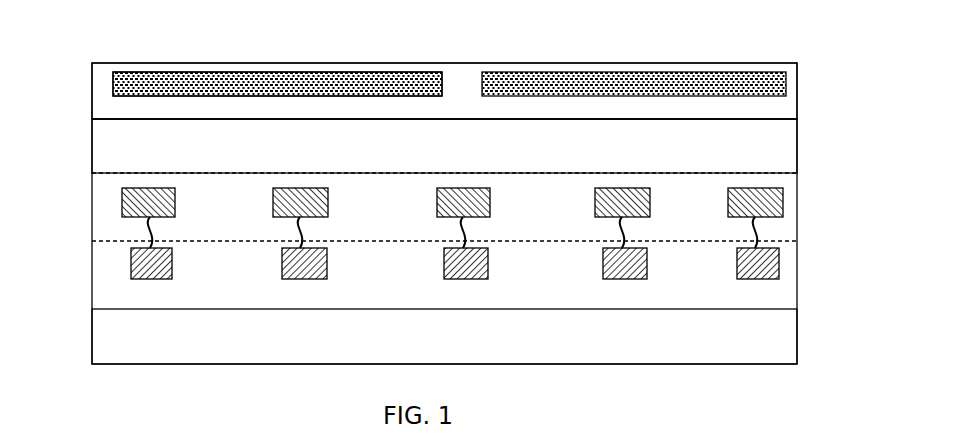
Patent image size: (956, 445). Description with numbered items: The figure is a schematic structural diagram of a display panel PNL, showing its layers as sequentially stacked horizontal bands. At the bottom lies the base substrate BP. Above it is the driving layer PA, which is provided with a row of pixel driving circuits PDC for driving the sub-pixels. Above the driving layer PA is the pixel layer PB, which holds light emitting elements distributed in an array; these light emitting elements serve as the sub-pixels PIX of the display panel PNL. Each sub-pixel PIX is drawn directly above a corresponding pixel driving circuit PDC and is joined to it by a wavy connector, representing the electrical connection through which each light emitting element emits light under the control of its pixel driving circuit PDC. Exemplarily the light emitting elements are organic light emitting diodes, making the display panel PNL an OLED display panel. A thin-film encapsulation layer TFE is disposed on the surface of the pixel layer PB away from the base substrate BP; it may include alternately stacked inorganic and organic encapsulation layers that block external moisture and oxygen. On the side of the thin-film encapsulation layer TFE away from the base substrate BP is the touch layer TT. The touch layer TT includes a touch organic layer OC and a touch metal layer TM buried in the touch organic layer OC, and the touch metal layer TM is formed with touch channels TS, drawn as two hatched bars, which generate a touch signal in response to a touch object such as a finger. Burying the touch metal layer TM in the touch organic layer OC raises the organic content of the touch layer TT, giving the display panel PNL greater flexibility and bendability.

The display panel PNL is at (444, 200).
The touch metal layer TM is at (755, 84).
The touch channel TS is at (788, 86).
The touch layer TT is at (105, 83).
The touch organic layer OC is at (778, 111).
The thin-film encapsulation layer TFE is at (790, 155).
The pixel layer PB is at (787, 200).
The driving layer PA is at (787, 269).
The sub-pixel PIX is at (121, 198).
The pixel driving circuit PDC is at (130, 268).
The base substrate BP is at (110, 342).